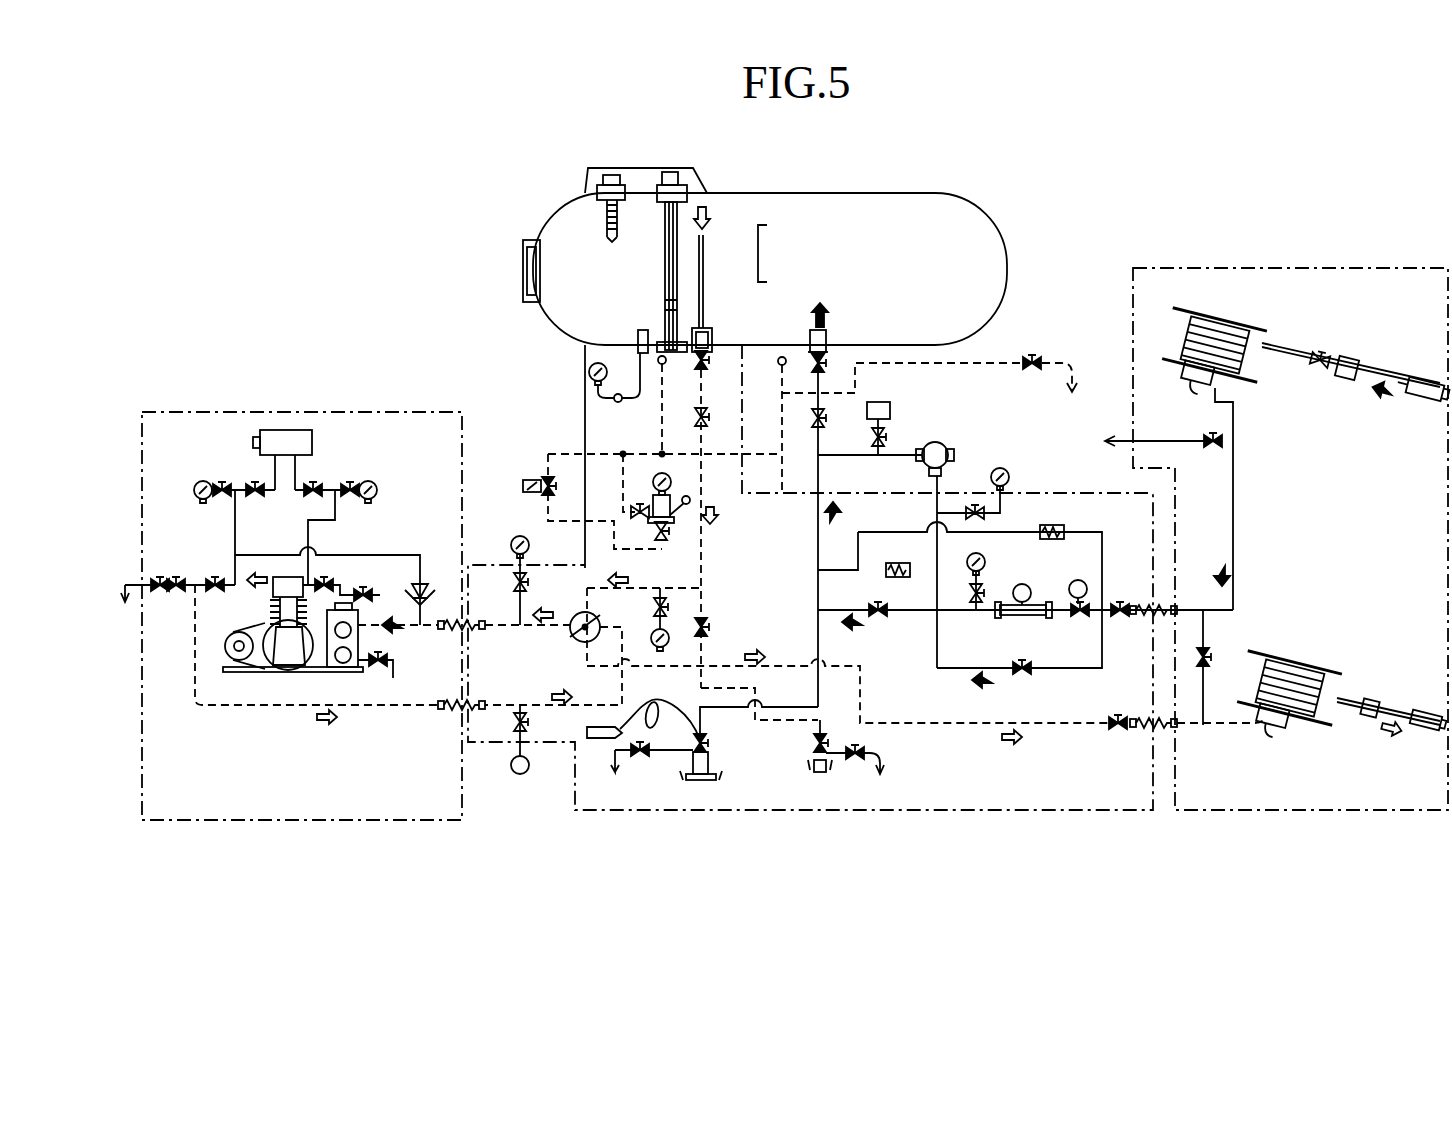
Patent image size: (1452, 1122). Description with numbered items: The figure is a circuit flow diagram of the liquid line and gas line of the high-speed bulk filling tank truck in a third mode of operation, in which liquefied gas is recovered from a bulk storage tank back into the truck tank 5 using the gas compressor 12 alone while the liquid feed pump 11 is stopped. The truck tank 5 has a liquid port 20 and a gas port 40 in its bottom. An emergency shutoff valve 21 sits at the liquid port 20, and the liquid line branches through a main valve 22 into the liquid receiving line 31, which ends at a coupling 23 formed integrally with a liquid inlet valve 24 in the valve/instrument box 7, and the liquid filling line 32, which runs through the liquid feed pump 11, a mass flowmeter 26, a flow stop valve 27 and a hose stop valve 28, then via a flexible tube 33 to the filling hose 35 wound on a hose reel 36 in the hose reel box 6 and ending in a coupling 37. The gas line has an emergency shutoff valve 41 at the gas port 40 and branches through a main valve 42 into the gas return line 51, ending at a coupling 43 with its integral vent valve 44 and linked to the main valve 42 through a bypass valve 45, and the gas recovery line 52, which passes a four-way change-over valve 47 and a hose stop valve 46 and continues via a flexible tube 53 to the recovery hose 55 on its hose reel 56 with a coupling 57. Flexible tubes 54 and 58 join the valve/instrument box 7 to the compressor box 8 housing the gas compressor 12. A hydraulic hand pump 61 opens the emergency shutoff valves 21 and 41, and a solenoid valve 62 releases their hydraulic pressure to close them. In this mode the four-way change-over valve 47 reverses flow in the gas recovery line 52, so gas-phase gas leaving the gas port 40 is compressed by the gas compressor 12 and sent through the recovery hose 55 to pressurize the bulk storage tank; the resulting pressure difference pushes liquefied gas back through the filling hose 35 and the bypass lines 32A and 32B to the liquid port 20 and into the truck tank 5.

The truck tank 5 is at (852, 212).
The hose reel box 6 is at (1322, 812).
The valve/instrument box 7 is at (678, 812).
The compressor box 8 is at (325, 822).
The liquid feed pump 11 is at (935, 442).
The gas compressor 12 is at (288, 660).
The liquid port 20 is at (813, 343).
The emergency shutoff valve 21 is at (835, 362).
The main valve 22 is at (826, 420).
The coupling 23 is at (712, 778).
The liquid inlet valve 24 is at (712, 743).
The mass flowmeter 26 is at (1030, 603).
The flow stop valve 27 is at (1080, 618).
The hose stop valve 28 is at (1120, 618).
The liquid receiving line 31 is at (815, 548).
The liquid filling line 32 is at (940, 485).
The bypass line 32A is at (1098, 670).
The bypass line 32B is at (915, 612).
The flexible tube 33 is at (1160, 608).
The filling hose 35 is at (1290, 368).
The hose reel 36 is at (1242, 332).
The coupling 37 is at (1418, 400).
The gas port 40 is at (710, 333).
The emergency shutoff valve 41 is at (714, 360).
The main valve 42 is at (722, 402).
The coupling 43 is at (830, 772).
The vent valve 44 is at (826, 733).
The bypass valve 45 is at (712, 630).
The hose stop valve 46 is at (1118, 733).
The four-way change-over valve 47 is at (573, 633).
The gas return line 51 is at (704, 600).
The gas recovery line 52 is at (890, 720).
The flexible tube 53 is at (1165, 730).
The flexible tube 54 is at (445, 635).
The recovery hose 55 is at (1336, 685).
The hose reel 56 is at (1288, 668).
The coupling 57 is at (1426, 708).
The flexible tube 58 is at (445, 715).
The hand pump 61 is at (672, 502).
The solenoid valve 62 is at (543, 478).